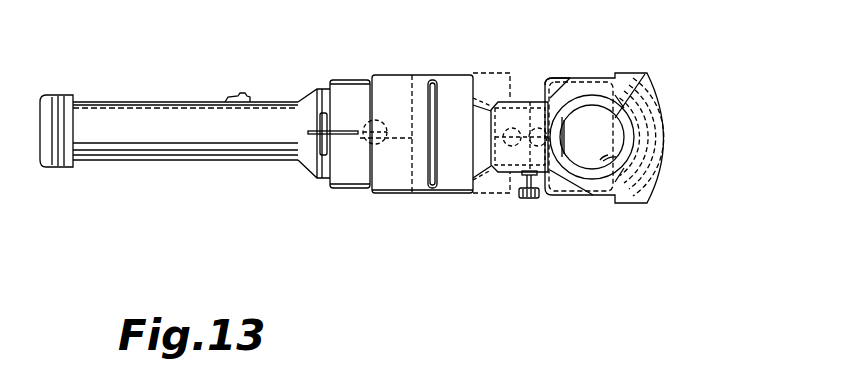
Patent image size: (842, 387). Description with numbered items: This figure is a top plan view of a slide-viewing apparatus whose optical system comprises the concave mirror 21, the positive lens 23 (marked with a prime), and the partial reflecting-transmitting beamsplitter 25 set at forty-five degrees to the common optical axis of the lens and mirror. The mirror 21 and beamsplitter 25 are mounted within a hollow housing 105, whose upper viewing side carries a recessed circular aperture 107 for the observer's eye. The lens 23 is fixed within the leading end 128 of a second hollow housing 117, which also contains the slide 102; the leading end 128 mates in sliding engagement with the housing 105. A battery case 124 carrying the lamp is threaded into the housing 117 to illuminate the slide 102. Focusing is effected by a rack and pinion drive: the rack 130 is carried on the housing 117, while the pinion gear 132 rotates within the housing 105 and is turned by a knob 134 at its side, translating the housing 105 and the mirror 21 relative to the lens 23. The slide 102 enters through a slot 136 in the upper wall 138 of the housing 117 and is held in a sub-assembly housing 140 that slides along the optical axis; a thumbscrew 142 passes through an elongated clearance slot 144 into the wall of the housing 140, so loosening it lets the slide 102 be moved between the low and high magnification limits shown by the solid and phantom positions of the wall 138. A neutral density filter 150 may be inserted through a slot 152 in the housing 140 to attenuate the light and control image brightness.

The battery case 124 is at (133, 103).
The sub-assembly housing 140 is at (341, 188).
The neutral density filter 150 is at (328, 116).
The slot 152 is at (318, 144).
The elongated clearance slot 144 is at (390, 128).
The thumbscrew 142 is at (376, 149).
The slide 102 is at (436, 121).
The slot 136 is at (437, 90).
The housing 117 is at (450, 188).
The upper wall 138 is at (475, 73).
The leading end 128 is at (497, 168).
The rack 130 is at (506, 99).
The knob 134 is at (530, 199).
The housing 105 is at (567, 194).
The pinion gear 132 is at (564, 127).
The beamsplitter 25 is at (612, 124).
The concave mirror 21 is at (662, 133).
The recessed circular aperture 107 is at (608, 155).
The positive lens 23 is at (560, 84).